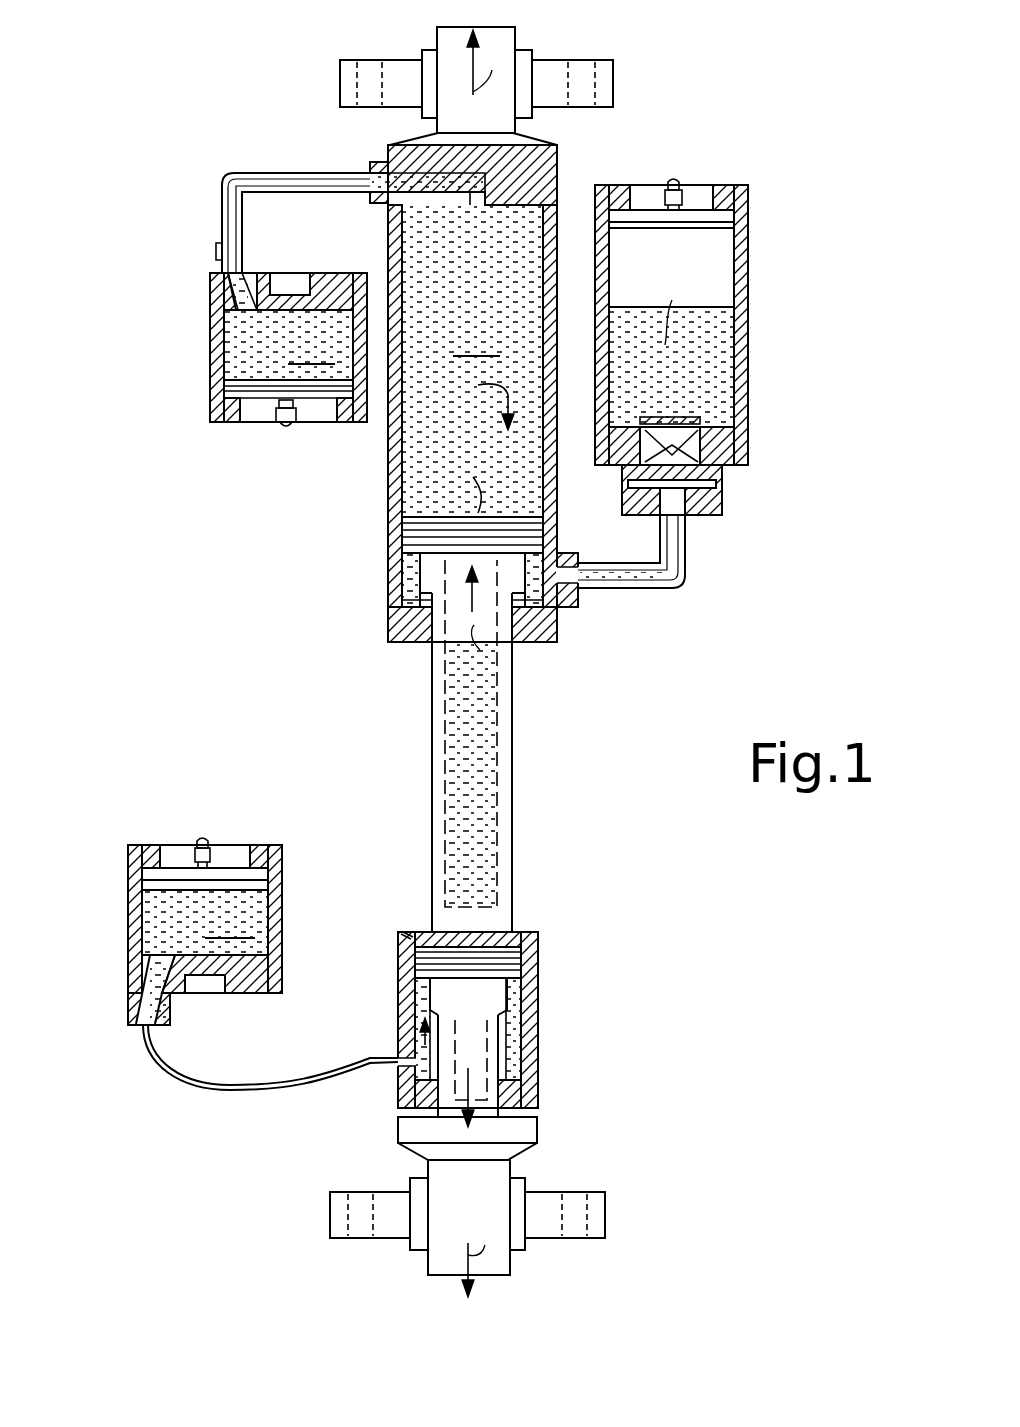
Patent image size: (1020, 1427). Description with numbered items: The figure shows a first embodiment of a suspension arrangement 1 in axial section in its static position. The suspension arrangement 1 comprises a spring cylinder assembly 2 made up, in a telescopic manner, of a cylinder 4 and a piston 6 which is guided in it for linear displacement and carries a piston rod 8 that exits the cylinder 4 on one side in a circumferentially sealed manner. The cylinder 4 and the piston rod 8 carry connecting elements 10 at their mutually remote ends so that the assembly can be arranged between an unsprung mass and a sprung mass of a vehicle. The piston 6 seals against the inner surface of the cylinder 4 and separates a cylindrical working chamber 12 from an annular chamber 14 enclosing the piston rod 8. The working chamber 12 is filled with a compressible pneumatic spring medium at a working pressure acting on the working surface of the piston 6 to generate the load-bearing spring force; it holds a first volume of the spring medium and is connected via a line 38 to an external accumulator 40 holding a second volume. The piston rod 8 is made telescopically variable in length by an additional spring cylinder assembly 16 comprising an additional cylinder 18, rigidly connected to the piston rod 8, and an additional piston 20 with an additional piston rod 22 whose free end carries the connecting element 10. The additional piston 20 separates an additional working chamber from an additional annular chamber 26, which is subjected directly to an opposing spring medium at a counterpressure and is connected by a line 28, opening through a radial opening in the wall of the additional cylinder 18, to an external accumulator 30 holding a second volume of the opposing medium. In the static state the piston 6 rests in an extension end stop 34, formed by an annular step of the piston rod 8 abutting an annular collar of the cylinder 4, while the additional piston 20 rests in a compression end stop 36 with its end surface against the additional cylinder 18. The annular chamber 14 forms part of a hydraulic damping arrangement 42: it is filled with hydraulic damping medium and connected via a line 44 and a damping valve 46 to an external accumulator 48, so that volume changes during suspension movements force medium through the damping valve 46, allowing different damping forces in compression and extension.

The suspension arrangement 1 is at (655, 860).
The spring cylinder assembly 2 is at (462, 416).
The cylinder 4 is at (473, 416).
The piston 6 is at (403, 534).
The piston rod 8 is at (496, 746).
The connecting element 10 is at (537, 53).
The working chamber 12 is at (520, 482).
The annular chamber 14 is at (405, 582).
The additional spring cylinder assembly 16 is at (469, 991).
The additional cylinder 18 is at (400, 988).
The additional piston 20 is at (425, 960).
The additional piston rod 22 is at (529, 1040).
The additional annular chamber 26 is at (400, 1085).
The line 28 is at (192, 1090).
The accumulator 30 is at (199, 904).
The extension end stop 34 is at (565, 632).
The compression end stop 36 is at (410, 933).
The line 38 is at (236, 180).
The accumulator 40 is at (221, 369).
The hydraulic damping arrangement 42 is at (709, 533).
The line 44 is at (690, 588).
The damping valve 46 is at (725, 470).
The accumulator 48 is at (715, 322).